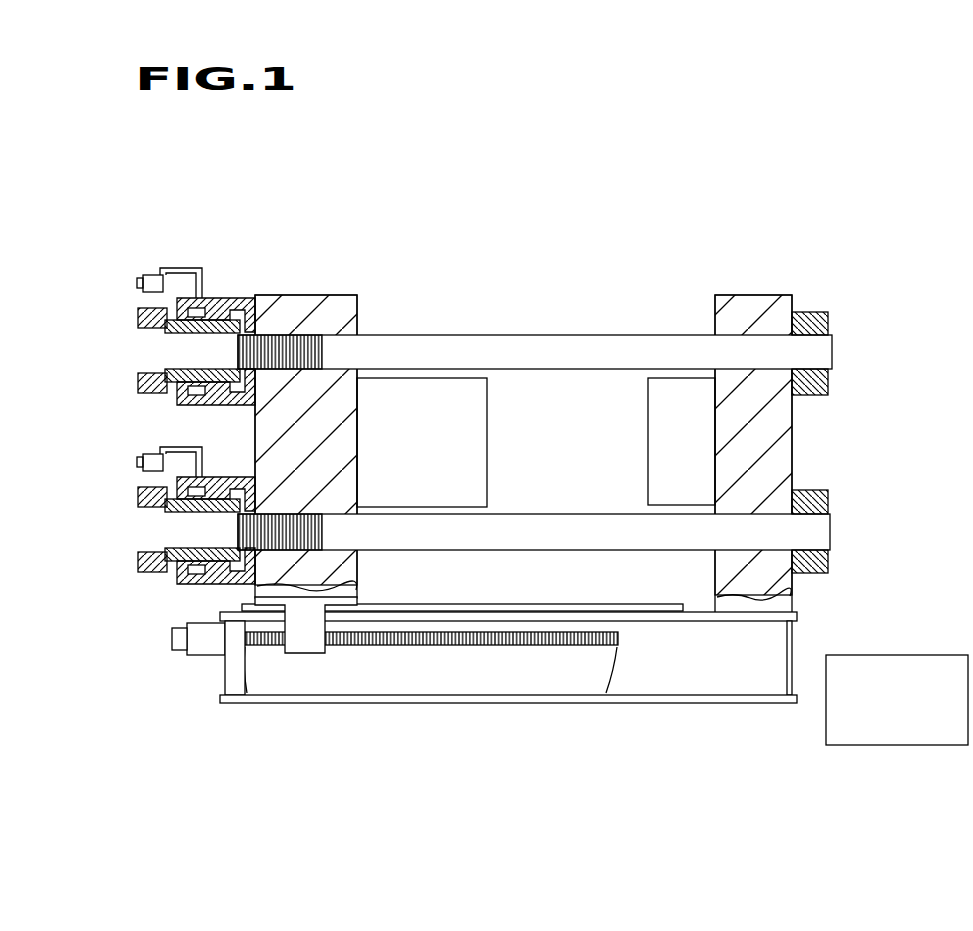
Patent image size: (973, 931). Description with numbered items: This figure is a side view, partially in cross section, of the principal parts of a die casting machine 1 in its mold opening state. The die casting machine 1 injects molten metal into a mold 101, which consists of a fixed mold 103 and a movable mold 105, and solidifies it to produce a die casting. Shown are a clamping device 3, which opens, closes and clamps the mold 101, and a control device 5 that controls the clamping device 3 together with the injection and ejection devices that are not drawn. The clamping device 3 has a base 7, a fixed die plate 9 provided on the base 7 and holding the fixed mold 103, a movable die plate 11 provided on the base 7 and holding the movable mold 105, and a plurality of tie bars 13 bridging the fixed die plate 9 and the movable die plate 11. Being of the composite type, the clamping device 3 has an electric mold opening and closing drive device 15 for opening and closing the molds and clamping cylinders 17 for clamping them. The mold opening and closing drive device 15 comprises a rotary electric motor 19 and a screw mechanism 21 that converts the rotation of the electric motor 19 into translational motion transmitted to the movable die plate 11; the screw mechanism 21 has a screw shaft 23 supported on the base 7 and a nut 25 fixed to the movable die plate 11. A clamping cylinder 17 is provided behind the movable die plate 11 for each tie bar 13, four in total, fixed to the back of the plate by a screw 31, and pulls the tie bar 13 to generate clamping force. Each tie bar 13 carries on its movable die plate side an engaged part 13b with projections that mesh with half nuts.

The die casting machine 1 is at (541, 66).
The clamping device 3 is at (597, 178).
The control device 5 is at (898, 655).
The base 7 is at (715, 690).
The fixed die plate 9 is at (784, 452).
The movable die plate 11 is at (333, 318).
The tie bar 13 is at (599, 355).
The engaged part 13b is at (290, 348).
The mold opening and closing drive device 15 is at (465, 665).
The clamping cylinder 17 is at (233, 297).
The electric motor 19 is at (205, 650).
The screw mechanism 21 is at (431, 704).
The screw shaft 23 is at (353, 650).
The nut 25 is at (307, 648).
The screw 31 is at (830, 293).
The mold 101 is at (514, 497).
The fixed mold 103 is at (680, 497).
The movable mold 105 is at (452, 493).